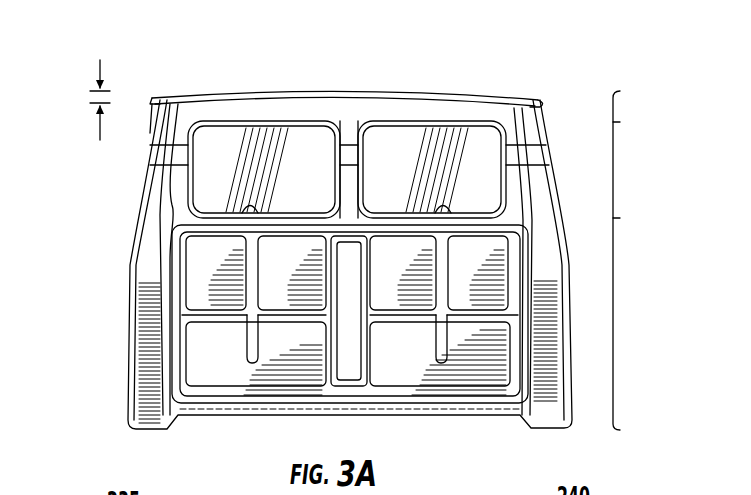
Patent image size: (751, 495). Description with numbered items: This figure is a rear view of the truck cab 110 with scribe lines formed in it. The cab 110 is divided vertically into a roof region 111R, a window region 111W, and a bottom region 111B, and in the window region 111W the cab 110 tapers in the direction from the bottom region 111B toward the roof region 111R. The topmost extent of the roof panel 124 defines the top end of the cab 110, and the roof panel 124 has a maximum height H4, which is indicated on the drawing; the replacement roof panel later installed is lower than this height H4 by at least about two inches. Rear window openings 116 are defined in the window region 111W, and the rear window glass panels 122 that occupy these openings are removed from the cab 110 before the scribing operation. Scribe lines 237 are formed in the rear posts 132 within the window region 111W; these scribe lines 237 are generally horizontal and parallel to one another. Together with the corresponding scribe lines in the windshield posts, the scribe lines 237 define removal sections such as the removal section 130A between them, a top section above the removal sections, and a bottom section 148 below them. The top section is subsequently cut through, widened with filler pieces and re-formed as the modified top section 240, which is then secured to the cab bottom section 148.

The cab 110 is at (558, 51).
The roof panel 124 is at (483, 93).
The removal section 130A is at (190, 157).
The scribe lines 237 is at (166, 98).
The rear posts 132 is at (153, 183).
The rear window glass panels 122 is at (208, 203).
The rear window openings 116 is at (248, 207).
The bottom section 148 is at (466, 424).
The modified top section 240 is at (147, 134).
The maximum height of the roof panel H4 is at (103, 73).
The roof region 111R is at (615, 107).
The window region 111W is at (615, 170).
The bottom region 111B is at (615, 323).